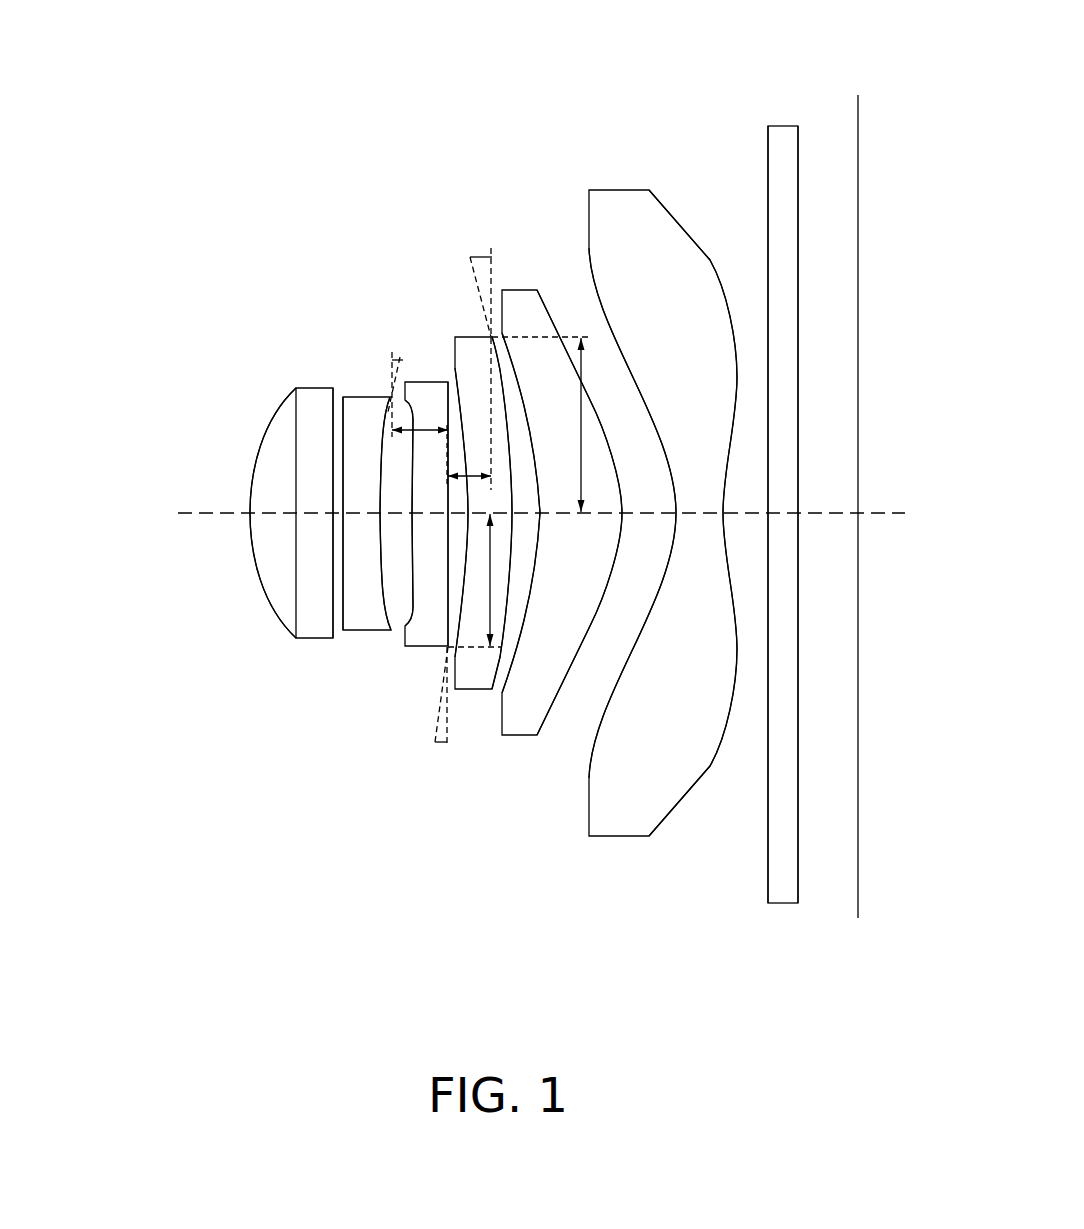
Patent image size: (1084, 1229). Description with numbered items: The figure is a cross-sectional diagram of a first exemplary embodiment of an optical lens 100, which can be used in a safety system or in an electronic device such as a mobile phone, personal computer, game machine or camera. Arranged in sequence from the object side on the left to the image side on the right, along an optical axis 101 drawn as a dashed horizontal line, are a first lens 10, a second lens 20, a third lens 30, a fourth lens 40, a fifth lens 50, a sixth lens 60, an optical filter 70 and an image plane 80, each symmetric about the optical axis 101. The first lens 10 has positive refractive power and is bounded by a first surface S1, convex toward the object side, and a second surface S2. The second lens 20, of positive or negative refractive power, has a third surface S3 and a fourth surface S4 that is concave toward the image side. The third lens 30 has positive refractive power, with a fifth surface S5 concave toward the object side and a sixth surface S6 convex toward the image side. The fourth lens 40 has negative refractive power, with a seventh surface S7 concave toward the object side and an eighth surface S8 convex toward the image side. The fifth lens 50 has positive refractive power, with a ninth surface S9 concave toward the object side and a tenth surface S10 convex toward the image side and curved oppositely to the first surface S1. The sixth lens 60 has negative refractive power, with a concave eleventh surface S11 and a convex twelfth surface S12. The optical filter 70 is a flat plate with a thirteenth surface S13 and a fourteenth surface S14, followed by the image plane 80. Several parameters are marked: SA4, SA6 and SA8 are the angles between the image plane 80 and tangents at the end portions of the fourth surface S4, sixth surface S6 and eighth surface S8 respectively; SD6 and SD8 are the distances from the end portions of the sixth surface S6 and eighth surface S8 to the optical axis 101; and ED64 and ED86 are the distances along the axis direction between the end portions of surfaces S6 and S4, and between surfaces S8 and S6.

The optical lens 100 is at (523, 34).
The optical axis 101 is at (205, 512).
The first lens 10 is at (314, 400).
The second lens 20 is at (367, 618).
The third lens 30 is at (437, 382).
The fourth lens 40 is at (477, 675).
The fifth lens 50 is at (515, 300).
The sixth lens 60 is at (628, 227).
The optical filter 70 is at (785, 128).
The image plane 80 is at (858, 110).
The first surface S1 is at (272, 600).
The second surface S2 is at (334, 636).
The third surface S3 is at (350, 403).
The fourth surface S4 is at (388, 412).
The fifth surface S5 is at (413, 617).
The sixth surface S6 is at (448, 617).
The seventh surface S7 is at (462, 380).
The eighth surface S8 is at (488, 347).
The ninth surface S9 is at (505, 693).
The tenth surface S10 is at (537, 735).
The eleventh surface S11 is at (590, 247).
The twelfth surface S12 is at (685, 225).
The thirteenth surface S13 is at (767, 160).
The fourteenth surface S14 is at (800, 158).
The angle SA4 is at (403, 360).
The angle SA6 is at (443, 742).
The angle SA8 is at (478, 257).
The distance ED64 is at (427, 433).
The distance ED86 is at (460, 477).
The distance SD6 is at (477, 580).
The distance SD8 is at (540, 424).